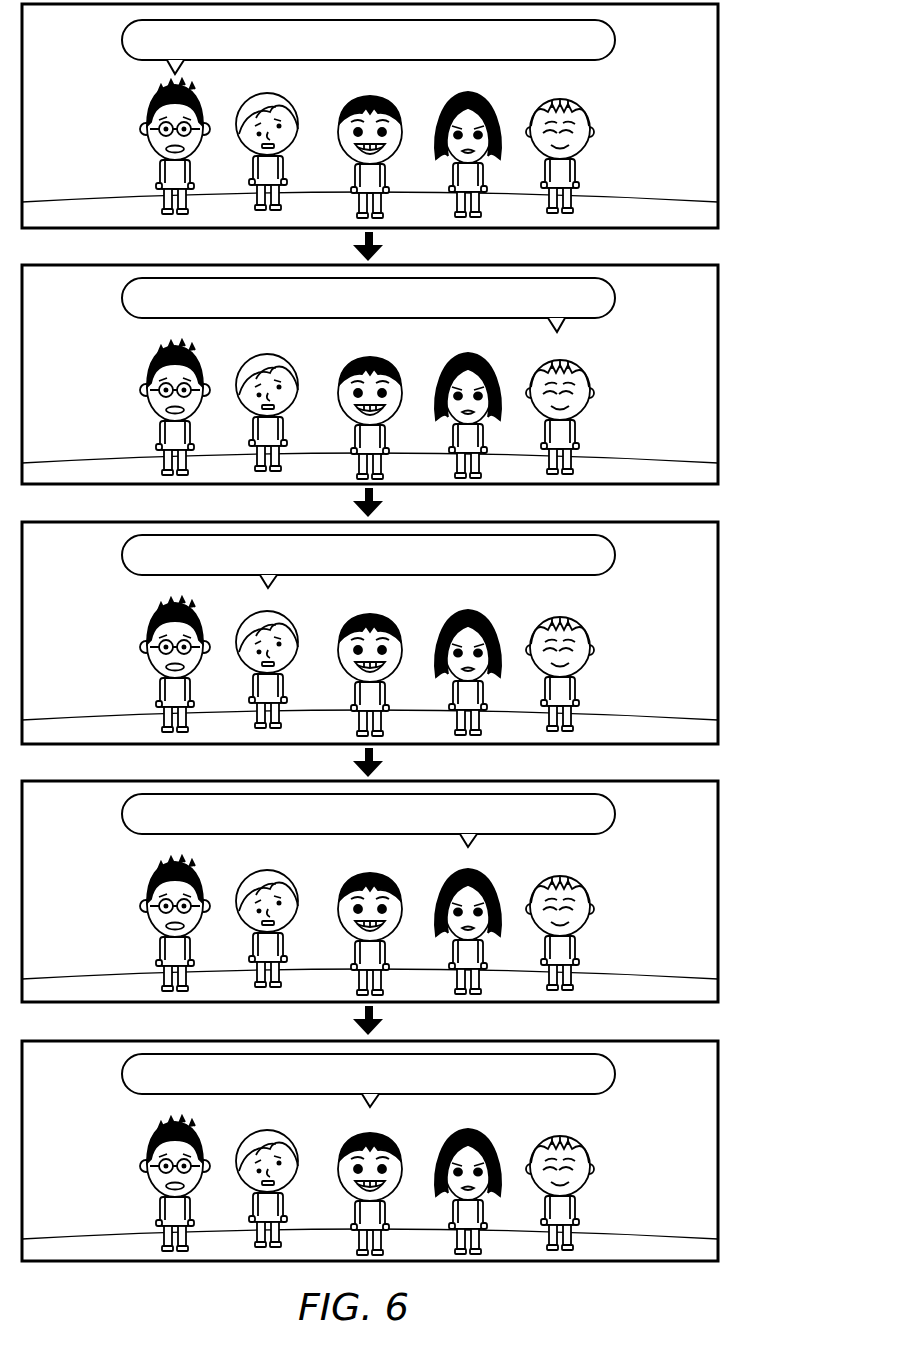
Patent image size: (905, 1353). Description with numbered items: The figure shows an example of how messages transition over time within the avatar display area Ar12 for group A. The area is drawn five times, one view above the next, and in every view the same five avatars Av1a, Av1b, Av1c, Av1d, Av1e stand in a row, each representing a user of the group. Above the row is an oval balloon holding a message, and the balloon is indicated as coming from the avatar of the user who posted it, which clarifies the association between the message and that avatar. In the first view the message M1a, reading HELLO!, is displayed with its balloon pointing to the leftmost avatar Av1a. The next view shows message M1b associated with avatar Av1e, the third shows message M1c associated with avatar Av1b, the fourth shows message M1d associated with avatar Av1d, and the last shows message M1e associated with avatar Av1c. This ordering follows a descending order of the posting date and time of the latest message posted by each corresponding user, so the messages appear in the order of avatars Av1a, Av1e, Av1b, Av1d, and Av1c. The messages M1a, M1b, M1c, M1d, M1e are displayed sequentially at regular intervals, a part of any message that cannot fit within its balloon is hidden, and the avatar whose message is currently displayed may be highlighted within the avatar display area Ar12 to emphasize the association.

The avatar Av1a is at (148, 113).
The avatar Av1b is at (318, 85).
The avatar Av1c is at (418, 90).
The avatar Av1d is at (515, 87).
The avatar Av1e is at (612, 112).
The message M1a is at (613, 39).
The message M1b is at (401, 305).
The message M1c is at (400, 561).
The message M1d is at (401, 820).
The message M1e is at (401, 1080).
The avatar display area Ar12 is at (692, 128).